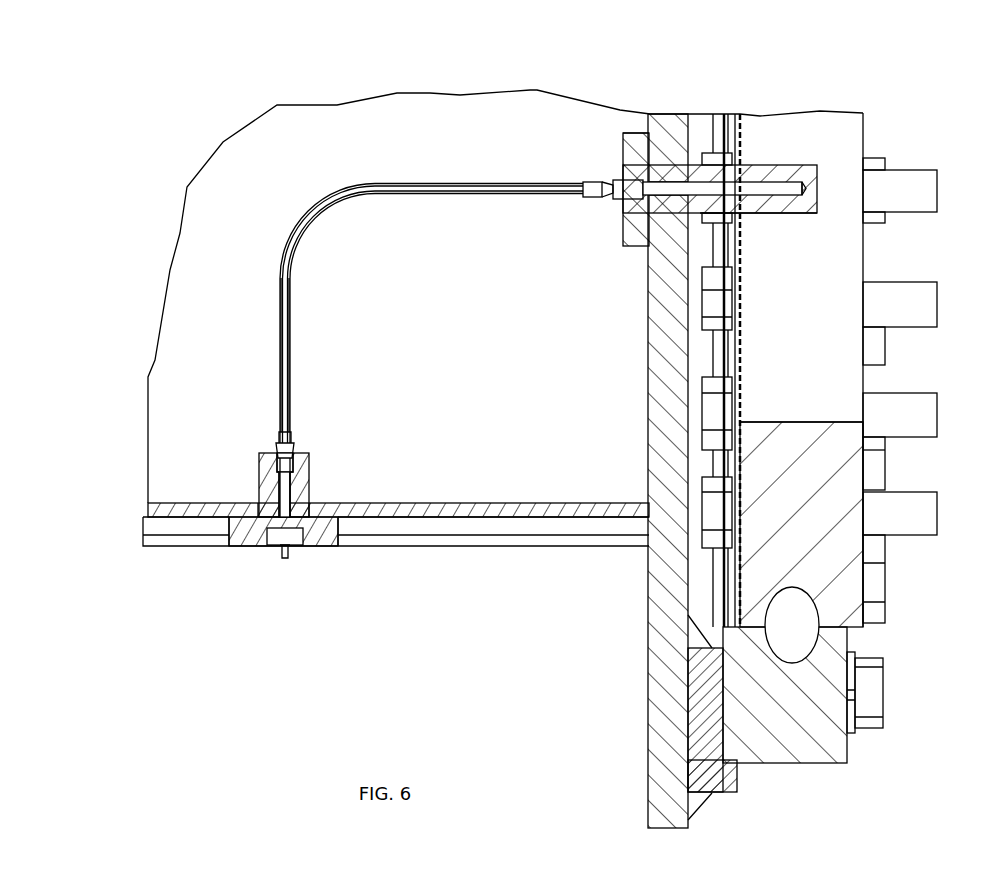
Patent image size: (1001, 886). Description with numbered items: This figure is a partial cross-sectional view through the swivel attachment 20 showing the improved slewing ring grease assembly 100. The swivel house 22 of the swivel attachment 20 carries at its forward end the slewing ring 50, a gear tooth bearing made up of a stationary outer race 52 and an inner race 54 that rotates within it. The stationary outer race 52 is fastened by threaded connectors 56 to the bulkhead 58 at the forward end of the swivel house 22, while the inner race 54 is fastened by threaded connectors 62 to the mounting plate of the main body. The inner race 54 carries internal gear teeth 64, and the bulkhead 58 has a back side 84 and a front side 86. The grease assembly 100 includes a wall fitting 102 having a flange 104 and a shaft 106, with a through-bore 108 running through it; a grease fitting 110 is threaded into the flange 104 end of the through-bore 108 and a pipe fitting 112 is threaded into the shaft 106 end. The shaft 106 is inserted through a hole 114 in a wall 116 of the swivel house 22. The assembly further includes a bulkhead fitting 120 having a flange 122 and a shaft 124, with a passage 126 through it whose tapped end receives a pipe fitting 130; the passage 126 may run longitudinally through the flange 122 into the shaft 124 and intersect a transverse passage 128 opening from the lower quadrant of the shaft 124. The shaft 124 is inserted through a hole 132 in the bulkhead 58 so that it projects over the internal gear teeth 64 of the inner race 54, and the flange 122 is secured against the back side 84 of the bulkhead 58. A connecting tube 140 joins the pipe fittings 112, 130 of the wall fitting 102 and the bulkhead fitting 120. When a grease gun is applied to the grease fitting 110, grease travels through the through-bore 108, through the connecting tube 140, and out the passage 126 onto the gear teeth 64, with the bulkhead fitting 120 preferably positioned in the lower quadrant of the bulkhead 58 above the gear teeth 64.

The swivel attachment 20 is at (124, 124).
The swivel house 22 is at (458, 528).
The slewing ring 50 is at (890, 118).
The stationary outer race 52 is at (793, 753).
The inner race 54 is at (855, 537).
The threaded connectors 56 is at (877, 690).
The bulkhead 58 is at (655, 665).
The threaded connectors 62 is at (712, 505).
The internal gear teeth 64 is at (848, 280).
The back side 84 is at (703, 350).
The front side 86 is at (703, 360).
The slewing ring grease assembly 100 is at (448, 153).
The wall fitting 102 is at (250, 542).
The flange 104 is at (217, 527).
The shaft 106 is at (265, 463).
The through-bore 108 is at (288, 493).
The grease fitting 110 is at (292, 562).
The pipe fitting 112 is at (290, 463).
The hole 114 is at (258, 508).
The wall 116 is at (433, 505).
The bulkhead fitting 120 is at (622, 142).
The flange 122 is at (633, 140).
The shaft 124 is at (773, 212).
The passage 126 is at (762, 185).
The transverse passage 128 is at (806, 189).
The pipe fitting 130 is at (618, 208).
The hole 132 is at (668, 266).
The connecting tube 140 is at (330, 205).